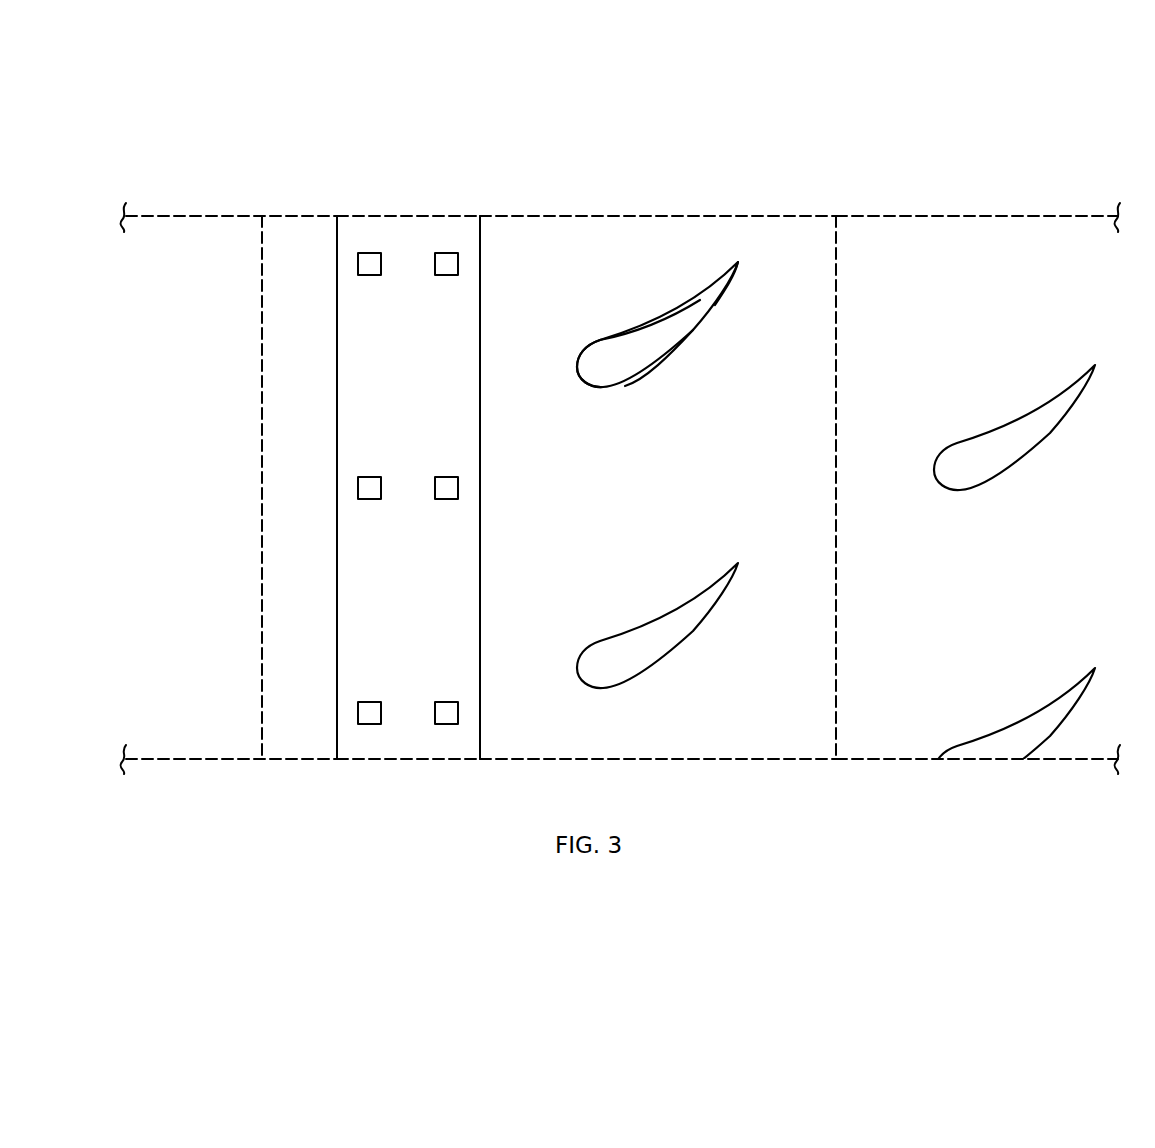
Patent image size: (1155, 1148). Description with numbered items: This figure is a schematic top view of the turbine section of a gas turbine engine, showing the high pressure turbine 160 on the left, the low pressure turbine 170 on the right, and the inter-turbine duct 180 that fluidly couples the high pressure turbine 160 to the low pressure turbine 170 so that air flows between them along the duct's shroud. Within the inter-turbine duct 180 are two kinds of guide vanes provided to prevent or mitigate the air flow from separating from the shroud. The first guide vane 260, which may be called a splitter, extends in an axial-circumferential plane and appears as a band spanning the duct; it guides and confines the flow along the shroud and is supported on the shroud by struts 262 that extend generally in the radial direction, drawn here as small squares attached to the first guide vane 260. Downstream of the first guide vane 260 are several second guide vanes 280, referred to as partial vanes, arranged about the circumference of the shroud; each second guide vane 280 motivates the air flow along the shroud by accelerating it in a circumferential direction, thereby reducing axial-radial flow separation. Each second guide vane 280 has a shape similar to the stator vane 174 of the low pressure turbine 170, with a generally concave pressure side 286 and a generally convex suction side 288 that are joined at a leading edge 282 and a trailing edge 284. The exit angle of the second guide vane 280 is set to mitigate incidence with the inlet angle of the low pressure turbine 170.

The high pressure turbine 160 is at (181, 206).
The low pressure turbine 170 is at (945, 206).
The stator vane 174 is at (1018, 425).
The inter-turbine duct 180 is at (631, 206).
The first guide vane 260 is at (469, 366).
The struts 262 is at (370, 275).
The second guide vane 280 is at (652, 309).
The leading edge 282 is at (578, 377).
The trailing edge 284 is at (740, 262).
The pressure side 286 is at (618, 338).
The suction side 288 is at (668, 355).